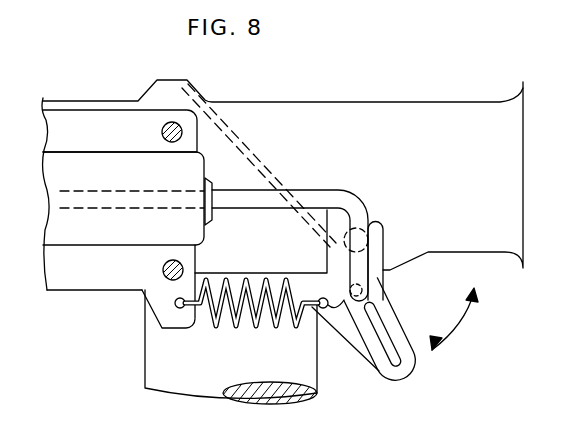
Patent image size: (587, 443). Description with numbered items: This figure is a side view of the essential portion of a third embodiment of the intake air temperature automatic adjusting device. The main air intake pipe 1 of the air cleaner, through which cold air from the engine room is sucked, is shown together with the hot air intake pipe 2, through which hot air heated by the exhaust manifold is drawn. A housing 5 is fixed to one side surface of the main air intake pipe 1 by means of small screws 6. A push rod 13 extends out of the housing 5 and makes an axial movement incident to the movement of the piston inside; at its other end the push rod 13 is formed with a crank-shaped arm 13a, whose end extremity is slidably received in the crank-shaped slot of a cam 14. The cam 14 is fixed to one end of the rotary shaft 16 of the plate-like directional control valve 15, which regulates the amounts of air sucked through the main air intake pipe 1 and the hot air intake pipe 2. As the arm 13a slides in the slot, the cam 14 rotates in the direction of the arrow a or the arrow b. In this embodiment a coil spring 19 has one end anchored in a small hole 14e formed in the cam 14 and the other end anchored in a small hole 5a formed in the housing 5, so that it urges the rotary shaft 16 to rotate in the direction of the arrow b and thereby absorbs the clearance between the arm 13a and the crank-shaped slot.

The main air intake pipe 1 is at (478, 102).
The hot air intake pipe 2 is at (145, 372).
The housing 5 is at (95, 246).
The small hole 5a is at (160, 314).
The small screws 6 is at (162, 125).
The push rod 13 is at (314, 190).
The crank-shaped arm 13a is at (406, 268).
The cam 14 is at (403, 383).
The small hole 14e is at (345, 340).
The directional control valve 15 is at (230, 130).
The rotary shaft 16 is at (345, 240).
The coil spring 19 is at (200, 322).
The arrow a is at (462, 310).
The arrow b is at (434, 366).